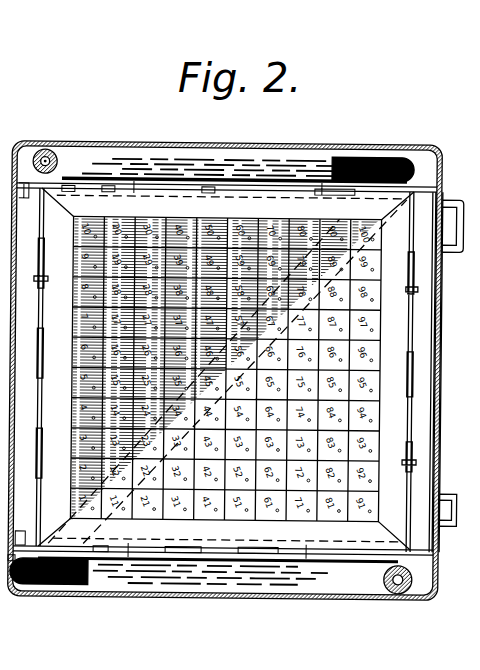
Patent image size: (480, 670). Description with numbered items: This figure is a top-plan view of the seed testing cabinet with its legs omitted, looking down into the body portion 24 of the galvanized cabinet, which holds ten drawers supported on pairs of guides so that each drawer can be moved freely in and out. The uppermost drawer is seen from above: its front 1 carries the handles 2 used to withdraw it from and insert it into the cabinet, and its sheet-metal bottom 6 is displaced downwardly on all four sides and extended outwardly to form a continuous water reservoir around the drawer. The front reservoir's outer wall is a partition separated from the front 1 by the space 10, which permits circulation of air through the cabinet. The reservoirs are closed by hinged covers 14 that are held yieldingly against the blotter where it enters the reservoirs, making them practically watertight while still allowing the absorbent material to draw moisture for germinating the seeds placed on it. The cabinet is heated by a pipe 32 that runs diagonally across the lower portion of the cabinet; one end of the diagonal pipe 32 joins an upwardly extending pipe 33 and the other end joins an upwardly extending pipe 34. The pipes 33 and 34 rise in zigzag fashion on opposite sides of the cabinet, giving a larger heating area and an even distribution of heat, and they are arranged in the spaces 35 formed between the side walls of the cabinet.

The front 1 is at (436, 294).
The handles 2 is at (450, 503).
The bottom 6 is at (16, 615).
The space 10 is at (420, 370).
The covers 14 is at (393, 446).
The body portion 24 is at (305, 598).
The pipe 32 is at (345, 218).
The upwardly extending pipe 33 is at (147, 165).
The upwardly extending pipe 34 is at (165, 578).
The spaces 35 is at (423, 154).